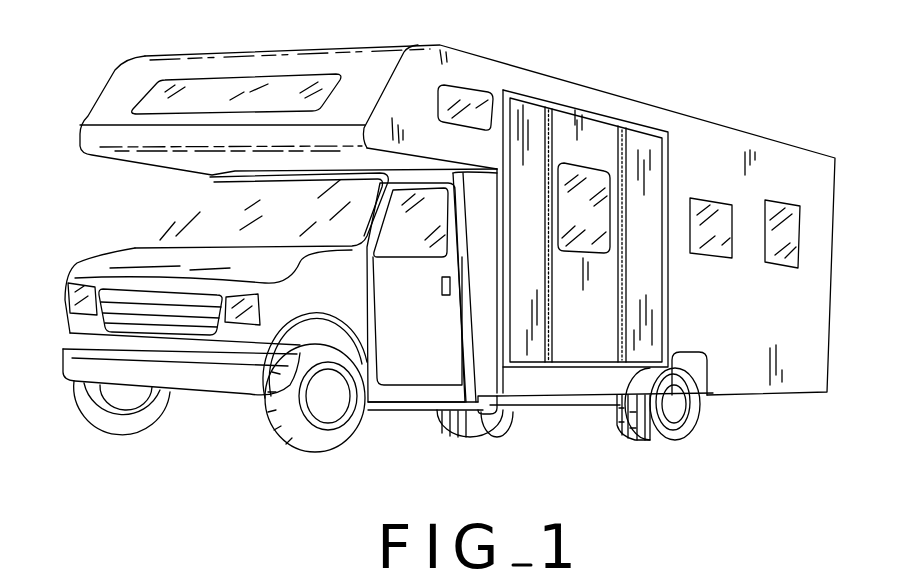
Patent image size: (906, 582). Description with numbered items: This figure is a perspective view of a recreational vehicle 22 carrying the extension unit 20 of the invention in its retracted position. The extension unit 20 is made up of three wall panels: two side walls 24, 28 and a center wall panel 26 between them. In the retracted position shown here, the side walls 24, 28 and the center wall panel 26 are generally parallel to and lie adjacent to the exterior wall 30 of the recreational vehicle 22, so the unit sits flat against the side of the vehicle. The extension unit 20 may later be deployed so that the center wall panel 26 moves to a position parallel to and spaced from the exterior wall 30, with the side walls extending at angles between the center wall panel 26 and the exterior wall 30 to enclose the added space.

The extension unit 20 is at (584, 246).
The recreational vehicle 22 is at (449, 248).
The side wall 24 is at (530, 124).
The center wall panel 26 is at (580, 137).
The side wall 28 is at (643, 140).
The exterior wall 30 is at (742, 155).